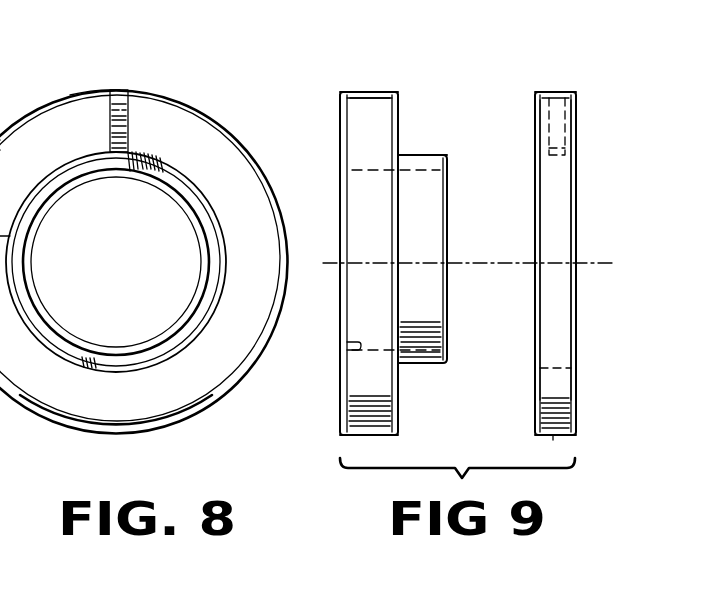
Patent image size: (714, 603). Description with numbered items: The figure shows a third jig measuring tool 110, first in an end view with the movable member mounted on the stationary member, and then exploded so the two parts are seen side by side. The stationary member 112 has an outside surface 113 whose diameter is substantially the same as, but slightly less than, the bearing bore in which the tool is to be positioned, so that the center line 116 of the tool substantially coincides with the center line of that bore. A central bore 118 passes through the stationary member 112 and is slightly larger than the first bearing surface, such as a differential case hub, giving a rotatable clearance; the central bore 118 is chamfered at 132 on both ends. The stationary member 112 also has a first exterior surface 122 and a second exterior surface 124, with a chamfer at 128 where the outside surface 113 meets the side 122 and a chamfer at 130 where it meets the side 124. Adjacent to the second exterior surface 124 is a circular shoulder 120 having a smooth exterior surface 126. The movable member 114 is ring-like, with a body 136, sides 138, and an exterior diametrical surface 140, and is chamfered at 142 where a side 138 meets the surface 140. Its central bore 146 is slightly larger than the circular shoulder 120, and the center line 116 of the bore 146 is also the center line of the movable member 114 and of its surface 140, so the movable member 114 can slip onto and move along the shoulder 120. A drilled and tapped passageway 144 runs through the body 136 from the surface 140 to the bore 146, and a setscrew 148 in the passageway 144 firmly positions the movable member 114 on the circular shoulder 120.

In FIG. 8, the jig measuring tool 110 is at (223, 108).
In FIG. 8, the stationary member 112 is at (3, 134).
In FIG. 9, the stationary member 112 is at (388, 88).
In FIG. 8, the outside surface 113 is at (68, 95).
In FIG. 9, the outside surface 113 is at (364, 90).
In FIG. 9, the movable member 114 is at (570, 84).
In FIG. 9, the center line 116 is at (333, 272).
In FIG. 8, the central bore 118 is at (116, 182).
In FIG. 9, the central bore 118 is at (345, 346).
In FIG. 8, the circular shoulder 120 is at (212, 250).
In FIG. 9, the circular shoulder 120 is at (452, 170).
In FIG. 9, the first exterior surface 122 is at (342, 124).
In FIG. 8, the second exterior surface 124 is at (7, 139).
In FIG. 9, the second exterior surface 124 is at (400, 124).
In FIG. 8, the smooth exterior surface 126 is at (207, 197).
In FIG. 9, the smooth exterior surface 126 is at (418, 162).
In FIG. 9, the chamfer 128 is at (342, 96).
In FIG. 9, the chamfer 130 is at (400, 100).
In FIG. 8, the chamfer 132 is at (33, 298).
In FIG. 8, the body 136 is at (209, 388).
In FIG. 9, the body 136 is at (556, 332).
In FIG. 9, the sides 138 is at (536, 152).
In FIG. 9, the exterior diametrical surface 140 is at (553, 438).
In FIG. 8, the chamfer 142 is at (150, 433).
In FIG. 9, the chamfer 142 is at (580, 436).
In FIG. 8, the drilled and tapped passageway 144 is at (130, 127).
In FIG. 9, the drilled and tapped passageway 144 is at (568, 120).
In FIG. 9, the central bore 146 is at (580, 166).
In FIG. 8, the setscrew 148 is at (132, 114).
In FIG. 9, the setscrew 148 is at (578, 92).